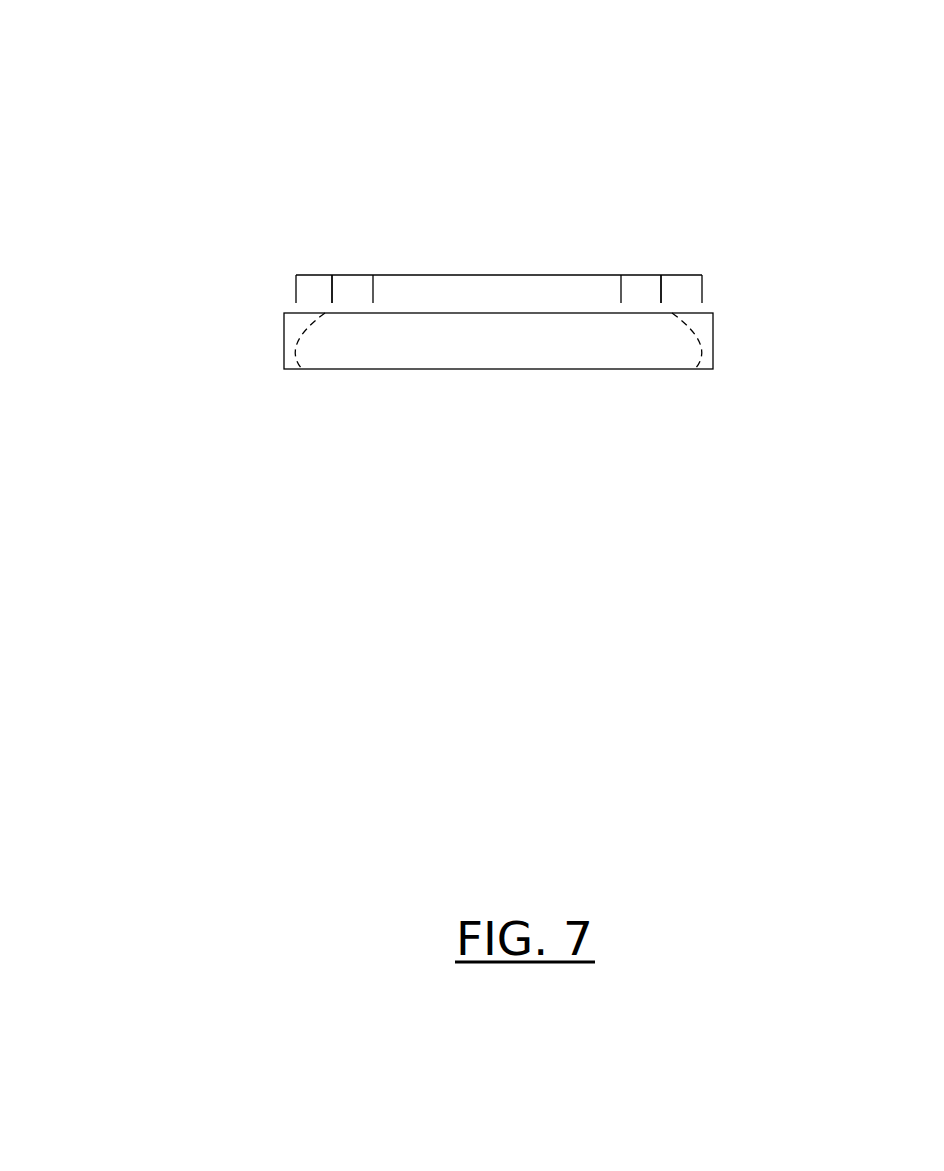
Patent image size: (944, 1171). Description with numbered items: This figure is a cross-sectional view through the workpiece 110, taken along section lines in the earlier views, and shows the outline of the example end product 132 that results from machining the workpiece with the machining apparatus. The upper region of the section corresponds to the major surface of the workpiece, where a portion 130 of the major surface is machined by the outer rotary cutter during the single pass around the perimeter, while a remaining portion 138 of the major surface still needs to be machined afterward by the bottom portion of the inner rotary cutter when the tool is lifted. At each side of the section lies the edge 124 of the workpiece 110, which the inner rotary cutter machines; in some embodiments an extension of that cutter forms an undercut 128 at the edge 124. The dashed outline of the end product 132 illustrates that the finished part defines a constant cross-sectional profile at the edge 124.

The workpiece 110 is at (149, 81).
The edge 124 is at (314, 275).
The portion of the major surface 130 is at (357, 275).
The remaining portion of the major surface 138 is at (490, 275).
The undercut 128 is at (298, 369).
The end product 132 is at (299, 337).